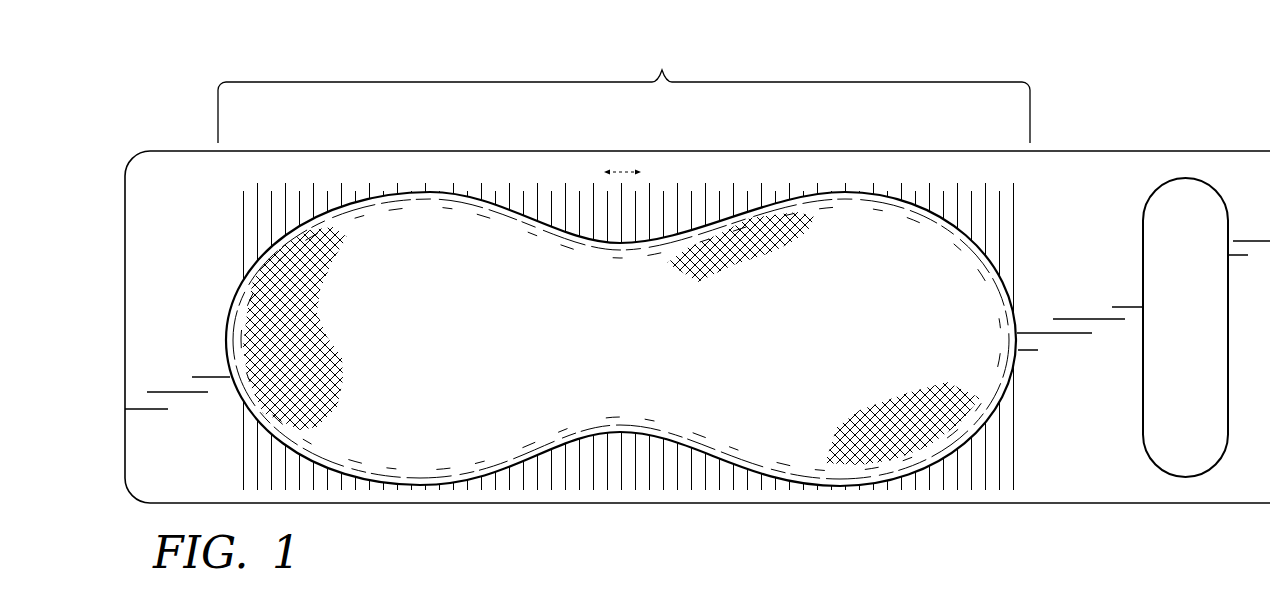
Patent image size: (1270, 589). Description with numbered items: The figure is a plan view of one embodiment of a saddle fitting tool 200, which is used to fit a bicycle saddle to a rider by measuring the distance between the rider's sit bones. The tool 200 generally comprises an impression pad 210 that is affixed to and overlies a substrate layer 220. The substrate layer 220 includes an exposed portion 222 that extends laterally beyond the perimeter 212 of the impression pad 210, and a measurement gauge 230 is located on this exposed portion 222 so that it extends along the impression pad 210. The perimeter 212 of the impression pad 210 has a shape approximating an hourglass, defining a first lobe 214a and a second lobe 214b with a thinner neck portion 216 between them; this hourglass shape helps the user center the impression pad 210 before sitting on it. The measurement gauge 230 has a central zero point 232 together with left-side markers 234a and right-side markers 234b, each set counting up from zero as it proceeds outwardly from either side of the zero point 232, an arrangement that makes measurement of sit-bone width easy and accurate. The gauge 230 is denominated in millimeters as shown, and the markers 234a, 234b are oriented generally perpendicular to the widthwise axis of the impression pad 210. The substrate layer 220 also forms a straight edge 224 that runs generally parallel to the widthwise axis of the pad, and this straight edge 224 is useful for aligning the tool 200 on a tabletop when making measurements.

The saddle fitting tool 200 is at (1112, 112).
The impression pad 210 is at (1001, 390).
The perimeter 212 is at (853, 485).
The first lobe 214a is at (436, 334).
The second lobe 214b is at (861, 334).
The neck portion 216 is at (627, 334).
The substrate layer 220 is at (1110, 468).
The exposed portion 222 is at (196, 190).
The straight edge 224 is at (556, 503).
The measurement gauge 230 is at (642, 267).
The zero point 232 is at (622, 195).
The left-side markers 234a is at (593, 190).
The right-side markers 234b is at (762, 187).